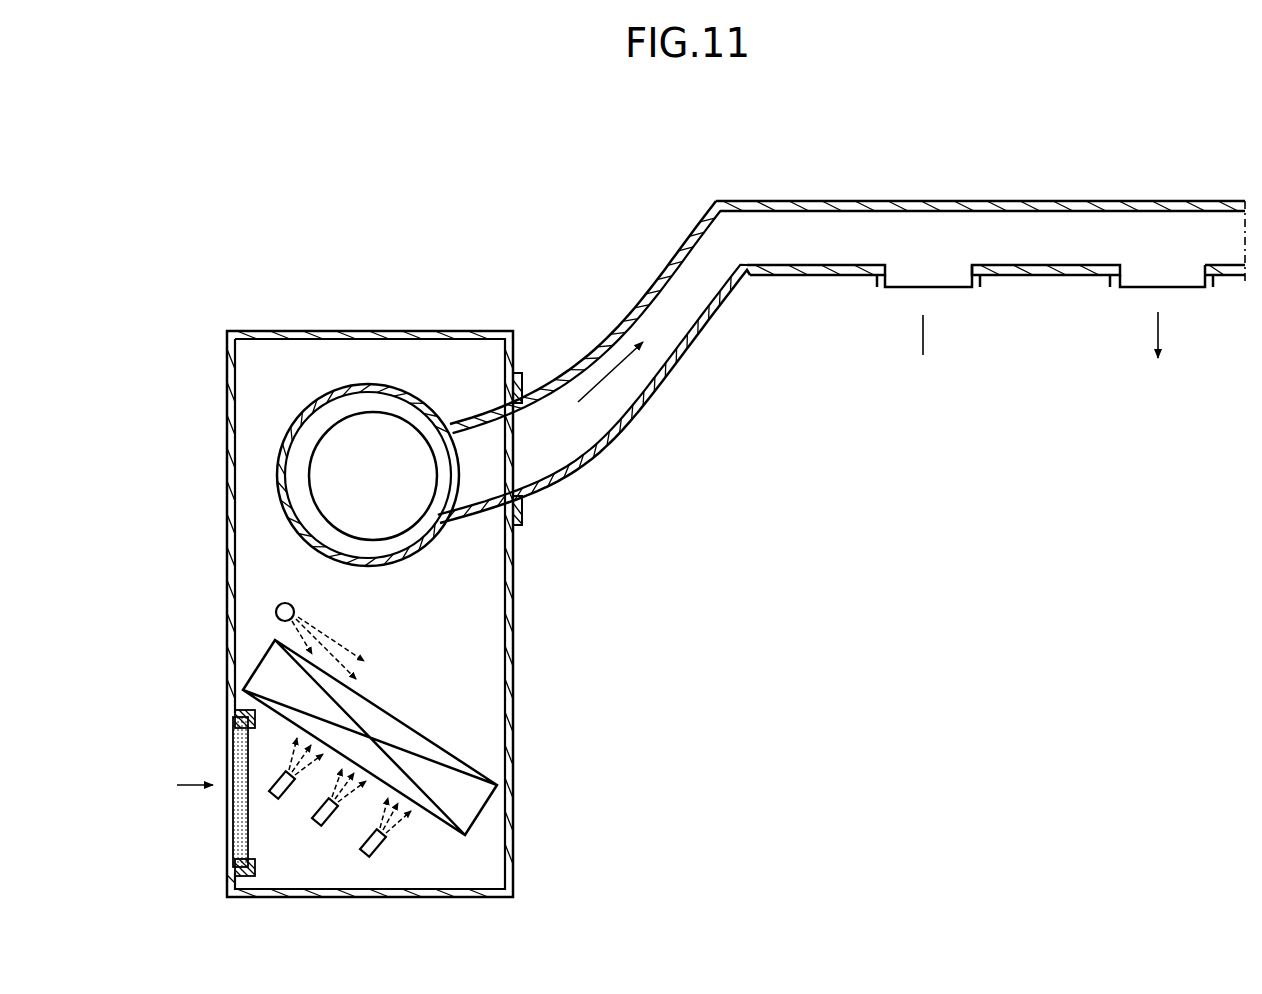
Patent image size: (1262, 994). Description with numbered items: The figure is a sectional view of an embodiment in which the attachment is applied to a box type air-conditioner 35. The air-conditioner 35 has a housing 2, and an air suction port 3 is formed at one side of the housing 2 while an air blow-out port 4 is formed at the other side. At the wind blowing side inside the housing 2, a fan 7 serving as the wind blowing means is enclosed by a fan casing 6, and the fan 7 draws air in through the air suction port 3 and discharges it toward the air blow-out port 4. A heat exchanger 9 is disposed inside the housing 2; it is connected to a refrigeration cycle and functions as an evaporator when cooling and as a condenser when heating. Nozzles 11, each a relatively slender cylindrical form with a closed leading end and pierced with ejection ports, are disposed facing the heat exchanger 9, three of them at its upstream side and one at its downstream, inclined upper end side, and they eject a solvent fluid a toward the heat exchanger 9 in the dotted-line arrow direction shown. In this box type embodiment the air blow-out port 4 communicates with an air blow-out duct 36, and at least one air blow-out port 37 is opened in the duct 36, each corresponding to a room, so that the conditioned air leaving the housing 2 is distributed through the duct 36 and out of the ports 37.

The housing 2 is at (227, 567).
The air suction port 3 is at (225, 845).
The air blow-out port 4 is at (515, 453).
The fan casing 6 is at (302, 413).
The fan 7 is at (310, 481).
The heat exchanger 9 is at (432, 741).
The nozzle 11 is at (284, 603).
The box type air-conditioner 35 is at (400, 305).
The air blow-out duct 36 is at (788, 200).
The air blow-out port 37 is at (947, 288).
The solvent fluid a is at (352, 652).